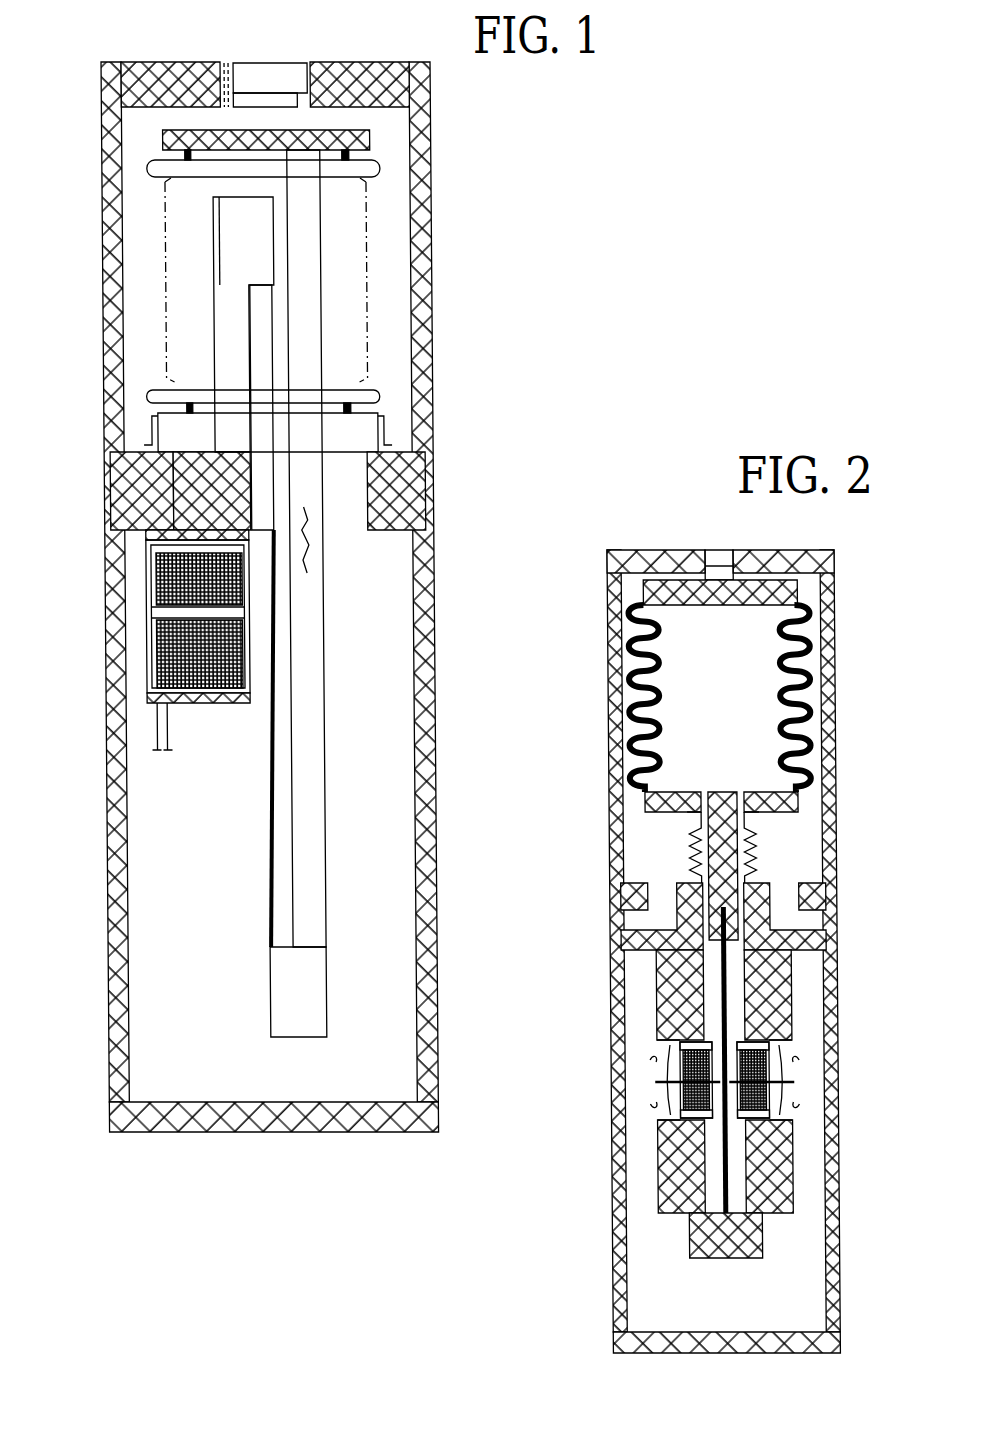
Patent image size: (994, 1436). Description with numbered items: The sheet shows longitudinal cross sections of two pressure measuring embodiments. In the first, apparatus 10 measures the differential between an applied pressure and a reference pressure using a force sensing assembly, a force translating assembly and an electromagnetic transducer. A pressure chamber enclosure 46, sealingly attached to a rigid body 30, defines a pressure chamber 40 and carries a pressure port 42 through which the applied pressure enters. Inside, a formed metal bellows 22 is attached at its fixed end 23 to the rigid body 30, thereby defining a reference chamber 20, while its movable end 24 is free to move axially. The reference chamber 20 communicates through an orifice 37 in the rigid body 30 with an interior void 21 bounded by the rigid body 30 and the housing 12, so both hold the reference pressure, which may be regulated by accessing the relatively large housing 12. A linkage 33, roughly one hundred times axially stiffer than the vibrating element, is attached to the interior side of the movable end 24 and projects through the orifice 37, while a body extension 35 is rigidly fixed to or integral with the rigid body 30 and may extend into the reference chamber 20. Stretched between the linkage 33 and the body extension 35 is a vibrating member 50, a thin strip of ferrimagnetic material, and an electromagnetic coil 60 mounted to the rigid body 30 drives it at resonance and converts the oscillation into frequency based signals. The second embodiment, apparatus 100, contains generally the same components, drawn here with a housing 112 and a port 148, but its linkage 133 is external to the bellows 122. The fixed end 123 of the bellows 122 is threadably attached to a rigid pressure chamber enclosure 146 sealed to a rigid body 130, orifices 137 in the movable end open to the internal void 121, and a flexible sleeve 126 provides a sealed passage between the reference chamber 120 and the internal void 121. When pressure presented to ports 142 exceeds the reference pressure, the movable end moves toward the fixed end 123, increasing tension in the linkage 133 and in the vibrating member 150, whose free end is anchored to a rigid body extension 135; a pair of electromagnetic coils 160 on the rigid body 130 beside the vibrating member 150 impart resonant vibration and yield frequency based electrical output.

In FIG. 1, the apparatus 10 is at (278, 576).
In FIG. 1, the housing 12 is at (418, 942).
In FIG. 1, the reference chamber 20 is at (177, 283).
In FIG. 1, the interior void 21 is at (398, 699).
In FIG. 1, the bellows 22 is at (372, 216).
In FIG. 1, the fixed end 23 is at (369, 396).
In FIG. 1, the movable end 24 is at (369, 145).
In FIG. 1, the rigid body 30 is at (230, 518).
In FIG. 1, the linkage 33 is at (312, 893).
In FIG. 1, the body extension 35 is at (197, 222).
In FIG. 1, the orifice 37 is at (350, 518).
In FIG. 1, the pressure chamber 40 is at (392, 296).
In FIG. 1, the pressure port 42 is at (297, 67).
In FIG. 1, the pressure chamber enclosure 46 is at (100, 172).
In FIG. 1, the vibrating member 50 is at (266, 823).
In FIG. 1, the electromagnetic coil 60 is at (143, 663).
In FIG. 2, the apparatus 100 is at (733, 928).
In FIG. 2, the housing 112 is at (836, 1141).
In FIG. 2, the reference chamber 120 is at (665, 670).
In FIG. 2, the internal void 121 is at (800, 1283).
In FIG. 2, the bellows 122 is at (809, 641).
In FIG. 2, the fixed end 123 is at (643, 592).
In FIG. 2, the flexible sleeve 126 is at (686, 841).
In FIG. 2, the rigid body 130 is at (651, 987).
In FIG. 2, the linkage 133 is at (777, 847).
In FIG. 2, the rigid body extension 135 is at (682, 1245).
In FIG. 2, the orifices 137 is at (736, 789).
In FIG. 2, the ports 142 is at (608, 916).
In FIG. 2, the rigid pressure chamber enclosure 146 is at (607, 550).
In FIG. 2, the cap 148 is at (727, 552).
In FIG. 2, the vibrating member 150 is at (720, 994).
In FIG. 2, the electromagnetic coils 160 is at (768, 1076).